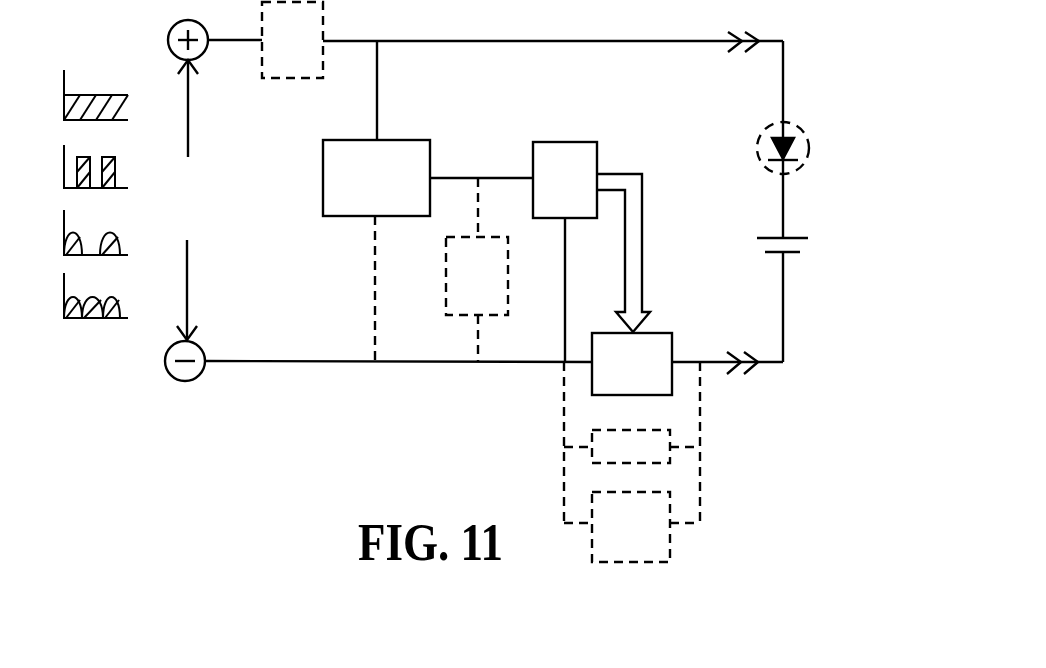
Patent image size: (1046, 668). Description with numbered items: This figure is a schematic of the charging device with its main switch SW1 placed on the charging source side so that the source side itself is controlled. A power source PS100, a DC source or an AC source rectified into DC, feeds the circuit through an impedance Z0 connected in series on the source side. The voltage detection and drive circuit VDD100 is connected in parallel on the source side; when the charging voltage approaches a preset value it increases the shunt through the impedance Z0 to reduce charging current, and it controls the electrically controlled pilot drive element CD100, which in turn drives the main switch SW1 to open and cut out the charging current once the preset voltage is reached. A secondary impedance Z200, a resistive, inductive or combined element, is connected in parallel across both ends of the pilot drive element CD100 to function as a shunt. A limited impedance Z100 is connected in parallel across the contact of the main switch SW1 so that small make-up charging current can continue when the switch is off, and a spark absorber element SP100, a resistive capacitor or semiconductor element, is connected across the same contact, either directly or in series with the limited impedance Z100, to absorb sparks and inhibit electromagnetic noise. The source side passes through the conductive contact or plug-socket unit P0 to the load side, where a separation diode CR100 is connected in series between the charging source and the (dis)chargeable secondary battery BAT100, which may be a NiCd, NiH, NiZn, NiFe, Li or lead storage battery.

The power source PS100 is at (136, 200).
The impedance Z0 is at (292, 40).
The conductive contact (or plug-socket unit) P0 is at (741, 187).
The voltage detection and drive circuit VDD100 is at (376, 251).
The electrically controlled pilot drive element CD100 is at (591, 252).
The secondary impedance Z200 is at (477, 270).
The main switch SW1 is at (632, 364).
The limited impedance Z100 is at (632, 442).
The spark absorber element SP100 is at (632, 527).
The separation diode CR100 is at (820, 134).
The (dis)chargeable secondary battery BAT100 is at (838, 251).